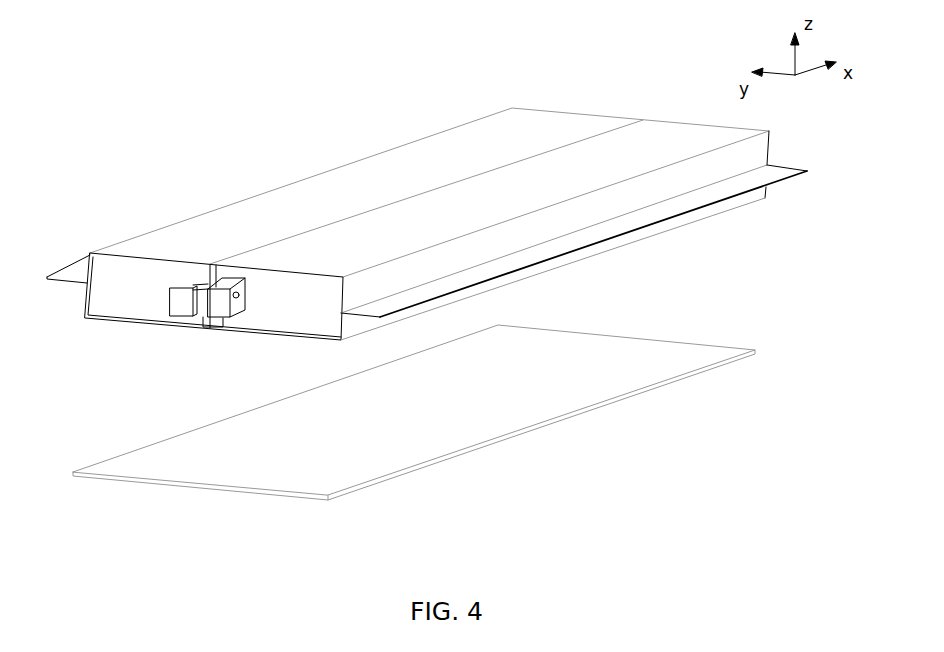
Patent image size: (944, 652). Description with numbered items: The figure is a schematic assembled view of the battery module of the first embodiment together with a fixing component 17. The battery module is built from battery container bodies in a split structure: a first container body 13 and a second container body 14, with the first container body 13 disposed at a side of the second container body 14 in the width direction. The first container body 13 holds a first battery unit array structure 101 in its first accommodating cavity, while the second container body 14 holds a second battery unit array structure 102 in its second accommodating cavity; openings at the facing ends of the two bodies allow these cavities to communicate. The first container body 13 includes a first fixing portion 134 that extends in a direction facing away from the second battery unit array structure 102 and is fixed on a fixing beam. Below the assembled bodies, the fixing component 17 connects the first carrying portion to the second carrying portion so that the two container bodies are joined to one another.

The first container body 13 is at (552, 127).
The second container body 14 is at (692, 138).
The first fixing portion 134 is at (72, 280).
The first battery unit array structure 101 is at (128, 297).
The second battery unit array structure 102 is at (286, 308).
The fixing component 17 is at (415, 433).